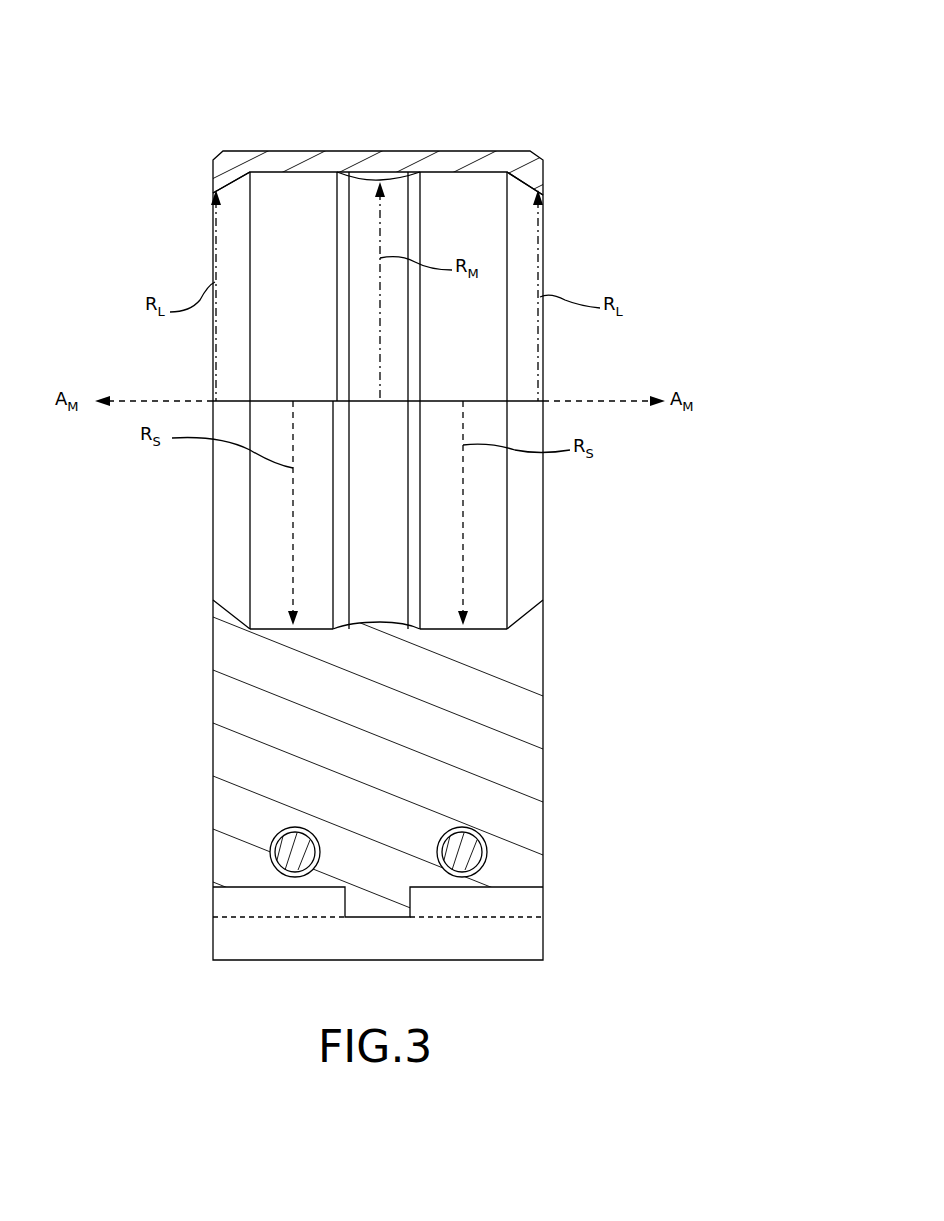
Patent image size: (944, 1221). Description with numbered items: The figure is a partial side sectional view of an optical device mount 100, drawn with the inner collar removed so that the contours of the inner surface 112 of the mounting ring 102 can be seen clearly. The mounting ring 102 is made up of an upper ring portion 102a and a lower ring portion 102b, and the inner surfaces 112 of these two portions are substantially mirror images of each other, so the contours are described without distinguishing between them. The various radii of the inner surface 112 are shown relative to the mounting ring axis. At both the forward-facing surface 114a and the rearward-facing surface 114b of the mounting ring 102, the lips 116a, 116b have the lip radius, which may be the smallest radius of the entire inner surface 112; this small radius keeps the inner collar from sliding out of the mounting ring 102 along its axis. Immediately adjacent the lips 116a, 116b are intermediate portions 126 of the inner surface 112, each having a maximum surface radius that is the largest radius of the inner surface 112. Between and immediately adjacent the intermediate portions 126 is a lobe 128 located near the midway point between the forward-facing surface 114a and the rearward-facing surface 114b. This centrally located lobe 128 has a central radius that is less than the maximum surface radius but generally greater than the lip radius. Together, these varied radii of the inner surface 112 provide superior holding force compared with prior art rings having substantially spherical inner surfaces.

The optical device mount 100 is at (643, 98).
The mounting ring 102 is at (525, 150).
The upper ring portion 102a is at (527, 263).
The lower ring portion 102b is at (228, 497).
The inner surface 112 is at (485, 520).
The forward-facing surface 114a is at (211, 639).
The rearward-facing surface 114b is at (545, 655).
The lip 116a is at (215, 188).
The lip 116b is at (528, 177).
The intermediate portion 126 is at (276, 621).
The lobe 128 is at (376, 178).